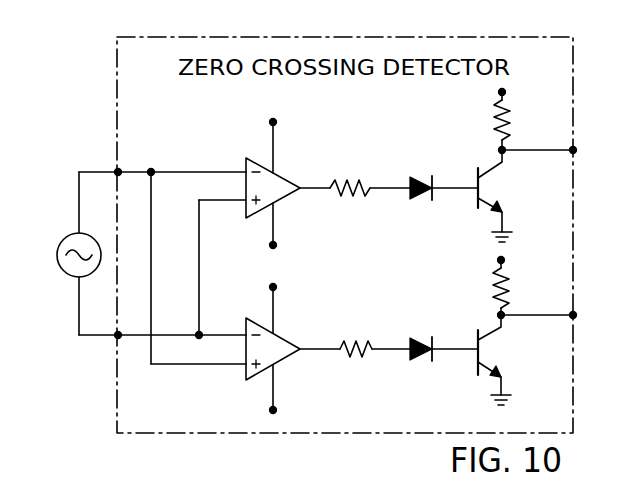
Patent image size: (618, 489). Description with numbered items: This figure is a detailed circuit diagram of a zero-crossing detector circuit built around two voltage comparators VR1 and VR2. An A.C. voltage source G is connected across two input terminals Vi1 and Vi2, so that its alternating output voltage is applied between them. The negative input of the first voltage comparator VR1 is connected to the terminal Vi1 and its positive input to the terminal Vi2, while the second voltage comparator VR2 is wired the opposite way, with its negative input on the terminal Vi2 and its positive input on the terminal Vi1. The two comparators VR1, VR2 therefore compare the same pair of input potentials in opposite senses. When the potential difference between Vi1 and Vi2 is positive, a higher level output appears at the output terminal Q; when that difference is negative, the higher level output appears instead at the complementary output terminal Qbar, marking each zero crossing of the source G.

The A.C. voltage source G is at (66, 253).
The input terminal Vi1 is at (153, 253).
The input terminal Vi2 is at (151, 285).
The voltage comparator VR1 is at (284, 186).
The voltage comparator VR2 is at (284, 351).
The output terminal Q is at (450, 162).
The output terminal Qbar is at (598, 305).